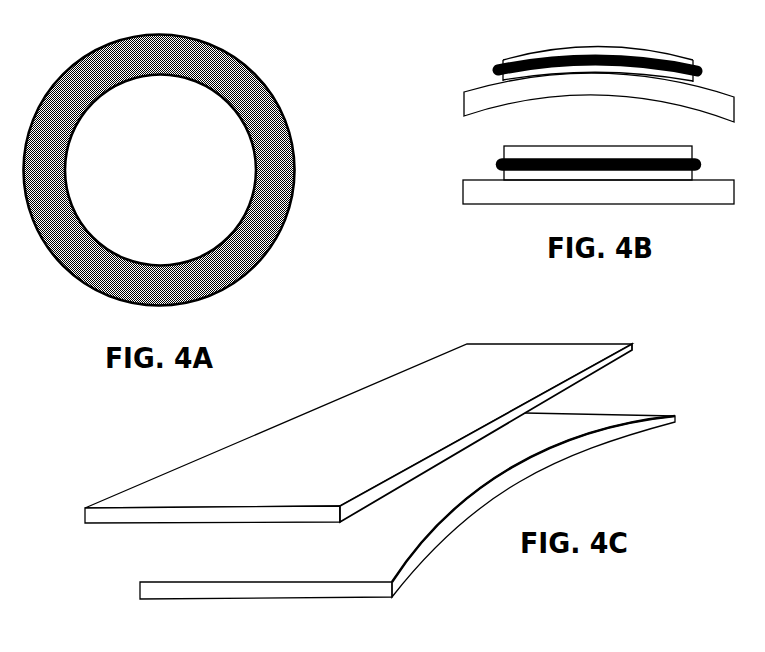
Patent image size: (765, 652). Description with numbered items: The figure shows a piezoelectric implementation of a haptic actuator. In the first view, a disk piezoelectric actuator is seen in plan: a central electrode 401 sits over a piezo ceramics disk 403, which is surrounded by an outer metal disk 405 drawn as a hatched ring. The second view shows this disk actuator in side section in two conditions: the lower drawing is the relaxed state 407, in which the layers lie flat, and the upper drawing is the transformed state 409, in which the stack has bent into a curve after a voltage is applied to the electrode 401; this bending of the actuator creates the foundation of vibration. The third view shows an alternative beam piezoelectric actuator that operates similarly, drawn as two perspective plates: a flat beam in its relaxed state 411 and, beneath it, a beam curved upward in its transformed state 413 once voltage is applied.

In FIG. 4A, the electrode 401 is at (158, 170).
In FIG. 4A, the piezo ceramics disk 403 is at (255, 163).
In FIG. 4A, the metal disk 405 is at (283, 220).
In FIG. 4B, the relaxed state 407 is at (449, 205).
In FIG. 4B, the transformed state 409 is at (449, 121).
In FIG. 4C, the relaxed state 411 is at (105, 503).
In FIG. 4C, the transformed state 413 is at (153, 578).